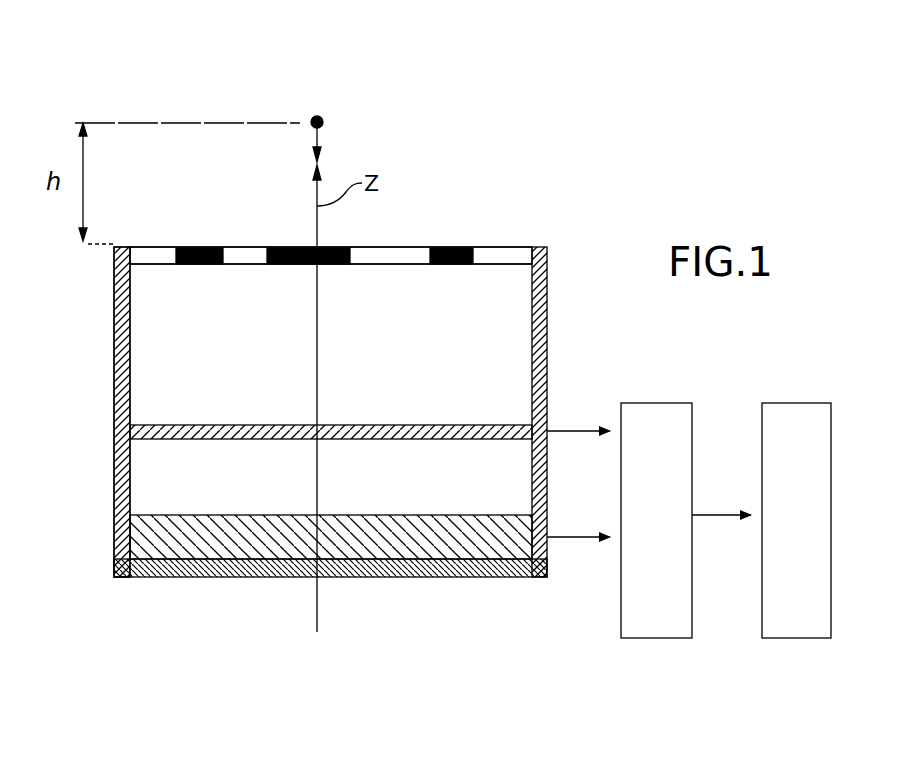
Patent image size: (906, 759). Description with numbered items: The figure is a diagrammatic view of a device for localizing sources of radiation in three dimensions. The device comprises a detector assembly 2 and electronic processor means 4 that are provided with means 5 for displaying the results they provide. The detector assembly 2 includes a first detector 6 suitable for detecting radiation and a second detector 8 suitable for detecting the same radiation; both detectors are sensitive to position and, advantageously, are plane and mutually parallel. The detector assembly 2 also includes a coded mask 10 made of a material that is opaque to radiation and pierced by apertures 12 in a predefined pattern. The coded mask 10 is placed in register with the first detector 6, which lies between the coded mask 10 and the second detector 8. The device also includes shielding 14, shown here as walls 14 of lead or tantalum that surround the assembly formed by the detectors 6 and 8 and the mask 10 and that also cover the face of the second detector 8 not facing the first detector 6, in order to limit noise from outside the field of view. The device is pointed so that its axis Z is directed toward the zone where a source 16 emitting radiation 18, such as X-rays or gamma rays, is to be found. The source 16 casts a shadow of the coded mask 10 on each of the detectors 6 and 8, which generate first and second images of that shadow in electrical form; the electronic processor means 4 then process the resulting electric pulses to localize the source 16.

The detector assembly 2 is at (511, 236).
The electronic processor means 4 is at (665, 413).
The display means 5 is at (808, 413).
The first detector 6 is at (443, 428).
The second detector 8 is at (424, 520).
The coded mask 10 is at (451, 248).
The apertures 12 is at (375, 254).
The shielding 14 is at (118, 493).
The source 16 is at (325, 122).
The radiation 18 is at (317, 140).